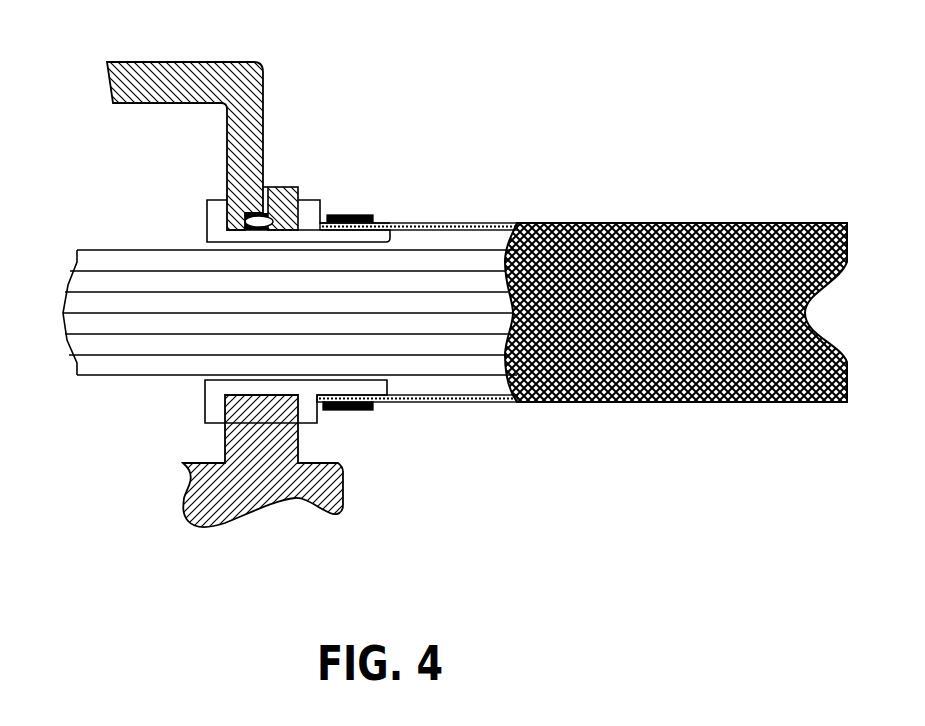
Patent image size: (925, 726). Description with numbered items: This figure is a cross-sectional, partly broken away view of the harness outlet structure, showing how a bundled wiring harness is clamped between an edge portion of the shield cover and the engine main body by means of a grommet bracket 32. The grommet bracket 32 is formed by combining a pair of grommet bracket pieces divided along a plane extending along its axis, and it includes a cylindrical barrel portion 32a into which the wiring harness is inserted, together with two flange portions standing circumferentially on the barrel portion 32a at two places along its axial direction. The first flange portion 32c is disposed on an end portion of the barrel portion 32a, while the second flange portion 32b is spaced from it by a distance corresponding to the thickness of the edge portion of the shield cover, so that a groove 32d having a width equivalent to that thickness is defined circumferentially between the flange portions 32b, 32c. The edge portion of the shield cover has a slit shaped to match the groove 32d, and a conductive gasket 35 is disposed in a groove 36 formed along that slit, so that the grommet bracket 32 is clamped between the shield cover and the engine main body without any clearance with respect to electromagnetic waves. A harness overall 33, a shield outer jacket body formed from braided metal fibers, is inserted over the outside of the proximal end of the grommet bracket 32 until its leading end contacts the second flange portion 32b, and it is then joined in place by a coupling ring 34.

The grommet bracket 32 is at (207, 228).
The barrel portion 32a is at (387, 222).
The second flange portion 32b is at (319, 200).
The first flange portion 32c is at (217, 198).
The groove 32d is at (295, 185).
The harness overall 33 is at (652, 221).
The coupling ring 34 is at (353, 408).
The conductive gasket 35 is at (272, 183).
The groove 36 is at (226, 173).